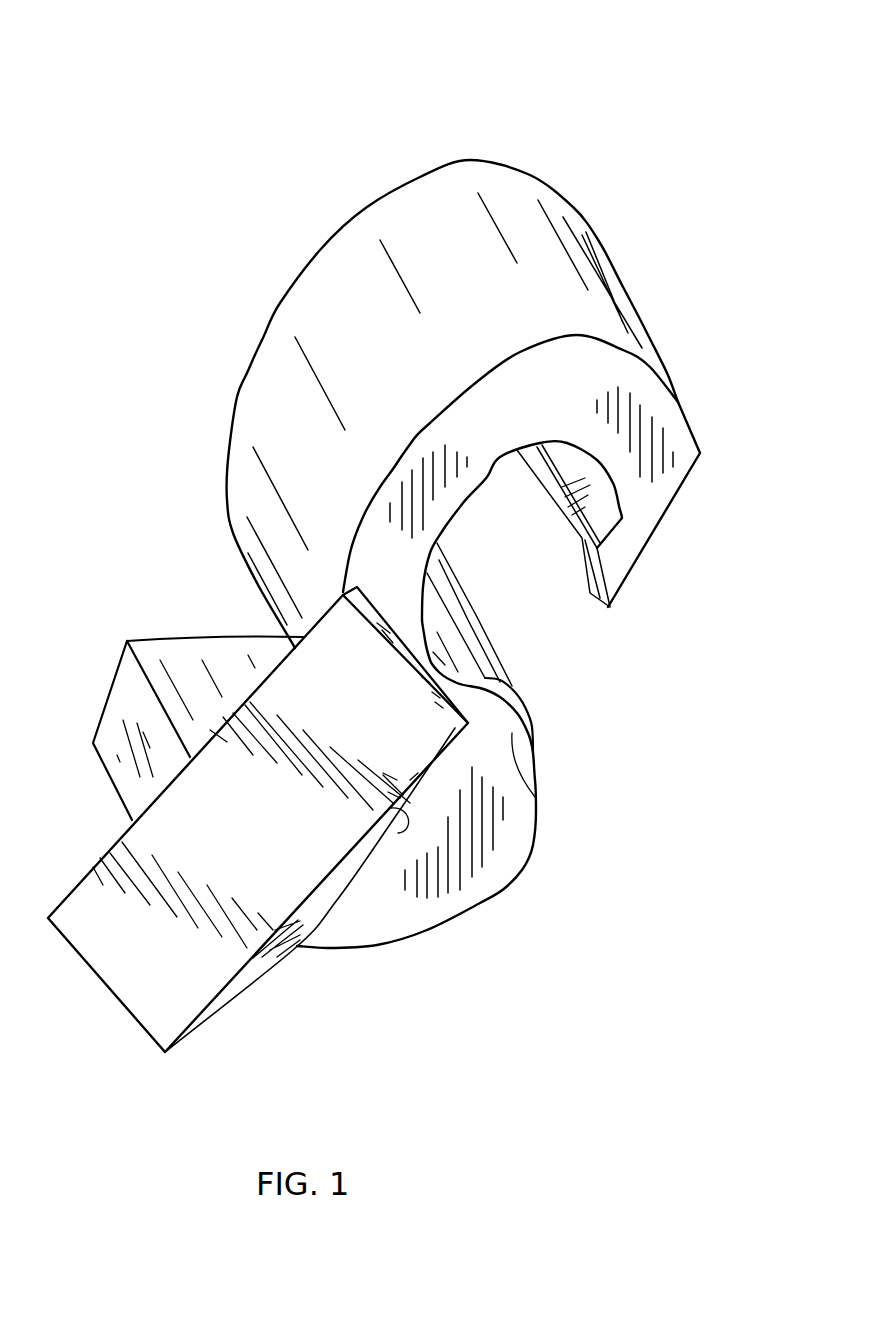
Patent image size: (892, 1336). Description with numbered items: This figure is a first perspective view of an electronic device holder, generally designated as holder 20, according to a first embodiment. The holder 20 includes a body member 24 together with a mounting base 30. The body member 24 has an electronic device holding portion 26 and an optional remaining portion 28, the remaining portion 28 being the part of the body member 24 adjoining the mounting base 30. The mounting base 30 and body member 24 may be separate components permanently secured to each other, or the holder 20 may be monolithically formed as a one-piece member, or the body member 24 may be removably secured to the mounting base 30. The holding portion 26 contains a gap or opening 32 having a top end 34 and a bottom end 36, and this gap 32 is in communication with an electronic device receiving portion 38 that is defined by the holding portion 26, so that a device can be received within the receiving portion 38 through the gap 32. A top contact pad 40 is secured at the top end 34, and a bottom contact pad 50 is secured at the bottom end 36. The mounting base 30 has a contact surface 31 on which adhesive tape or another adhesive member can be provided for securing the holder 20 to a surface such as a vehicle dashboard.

The holder 20 is at (524, 95).
The body member 24 is at (200, 400).
The electronic device holding portion 26 is at (490, 423).
The electronic device receiving portion 38 is at (497, 527).
The top end 34 is at (622, 563).
The top contact pad 40 is at (587, 585).
The gap 32 is at (587, 660).
The bottom contact pad 50 is at (512, 733).
The bottom end 36 is at (533, 800).
The remaining portion 28 is at (462, 893).
The mounting base 30 is at (235, 993).
The contact surface 31 is at (168, 1005).